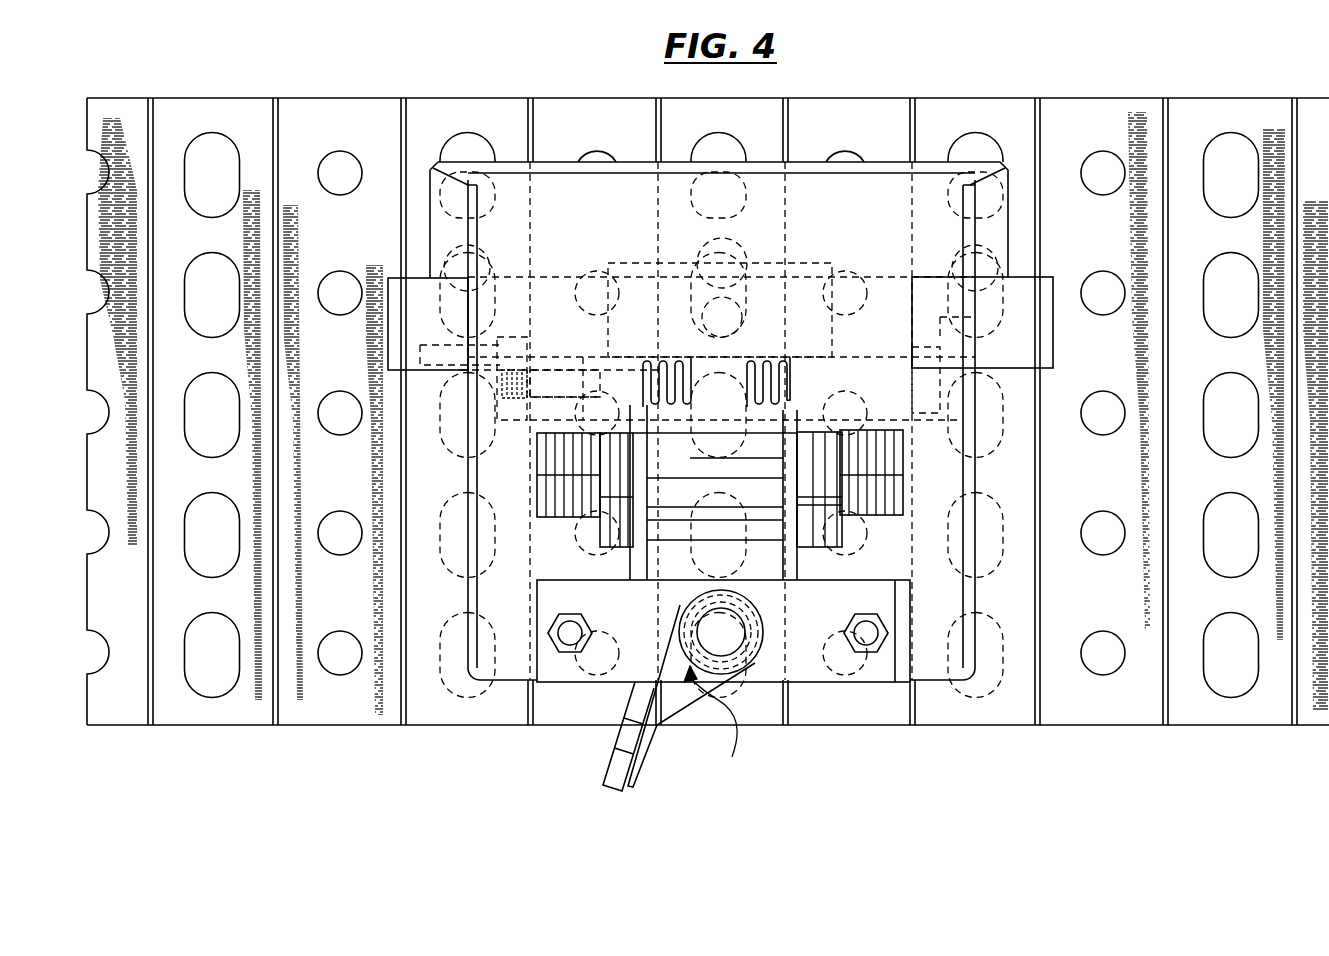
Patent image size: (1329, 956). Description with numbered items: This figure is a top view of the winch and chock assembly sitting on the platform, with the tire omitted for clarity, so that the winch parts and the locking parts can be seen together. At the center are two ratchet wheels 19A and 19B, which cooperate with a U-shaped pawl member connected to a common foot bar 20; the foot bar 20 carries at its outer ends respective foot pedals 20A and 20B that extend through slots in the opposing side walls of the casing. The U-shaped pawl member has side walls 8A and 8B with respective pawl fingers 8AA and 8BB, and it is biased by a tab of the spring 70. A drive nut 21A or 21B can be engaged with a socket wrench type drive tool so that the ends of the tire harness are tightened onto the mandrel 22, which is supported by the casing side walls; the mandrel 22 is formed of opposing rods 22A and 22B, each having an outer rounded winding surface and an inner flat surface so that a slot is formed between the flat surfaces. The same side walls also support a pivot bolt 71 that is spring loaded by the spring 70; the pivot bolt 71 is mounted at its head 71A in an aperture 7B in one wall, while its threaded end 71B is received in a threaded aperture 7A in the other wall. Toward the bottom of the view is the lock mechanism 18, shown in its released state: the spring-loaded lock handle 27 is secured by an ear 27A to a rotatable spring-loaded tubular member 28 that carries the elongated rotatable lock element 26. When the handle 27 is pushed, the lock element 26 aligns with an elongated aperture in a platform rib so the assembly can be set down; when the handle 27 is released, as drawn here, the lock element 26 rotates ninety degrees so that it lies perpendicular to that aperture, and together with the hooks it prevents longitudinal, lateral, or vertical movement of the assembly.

The lock mechanism 18 is at (714, 726).
The ratchet wheel 19A is at (603, 530).
The ratchet wheel 19B is at (863, 517).
The foot bar 20 is at (1040, 289).
The foot pedal 20A is at (404, 303).
The foot pedal 20B is at (1037, 323).
The drive nut 21A is at (555, 493).
The drive nut 21B is at (877, 462).
The mandrel 22 is at (520, 468).
The rod 22A is at (767, 443).
The rod 22B is at (768, 497).
The lock element 26 is at (750, 633).
The lock handle 27 is at (617, 760).
The ear 27A is at (670, 697).
The tubular member 28 is at (723, 638).
The spring 70 is at (836, 340).
The pivot bolt 71 is at (538, 378).
The head 71A is at (930, 390).
The threaded end 71B is at (500, 400).
The threaded aperture 7A is at (500, 360).
The aperture 7B is at (950, 318).
The side wall 8A is at (597, 392).
The pawl finger 8AA is at (585, 390).
The side wall 8B is at (768, 357).
The pawl finger 8BB is at (770, 495).